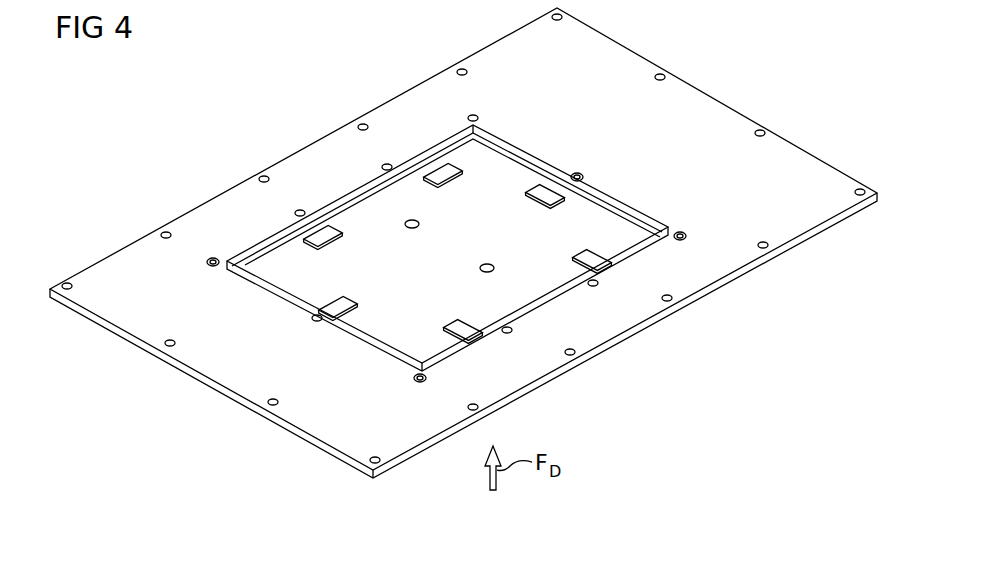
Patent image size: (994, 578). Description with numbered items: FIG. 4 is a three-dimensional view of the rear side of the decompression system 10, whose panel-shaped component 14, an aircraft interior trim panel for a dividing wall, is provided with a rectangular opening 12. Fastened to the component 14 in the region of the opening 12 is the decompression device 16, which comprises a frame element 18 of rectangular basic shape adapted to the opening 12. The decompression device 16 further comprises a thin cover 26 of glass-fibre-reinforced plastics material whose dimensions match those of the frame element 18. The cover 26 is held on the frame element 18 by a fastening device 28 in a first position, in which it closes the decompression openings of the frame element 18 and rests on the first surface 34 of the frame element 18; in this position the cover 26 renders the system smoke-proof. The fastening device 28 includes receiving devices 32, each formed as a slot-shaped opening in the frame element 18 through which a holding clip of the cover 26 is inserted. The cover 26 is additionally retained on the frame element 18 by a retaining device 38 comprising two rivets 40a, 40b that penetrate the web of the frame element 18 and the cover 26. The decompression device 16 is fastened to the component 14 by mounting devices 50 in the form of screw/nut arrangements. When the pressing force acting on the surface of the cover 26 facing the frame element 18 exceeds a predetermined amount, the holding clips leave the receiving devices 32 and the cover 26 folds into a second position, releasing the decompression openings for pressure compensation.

The decompression system 10 is at (762, 62).
The opening 12 is at (522, 153).
The component 14 is at (416, 103).
The decompression device 16 is at (516, 116).
The frame element 18 is at (318, 222).
The cover 26 is at (542, 287).
The fastening device 28 is at (604, 206).
The receiving device 32 is at (578, 262).
The first surface 34 is at (336, 304).
The retaining device 38 is at (446, 232).
The rivet 40a is at (413, 229).
The rivet 40b is at (486, 273).
The mounting device 50 is at (206, 263).